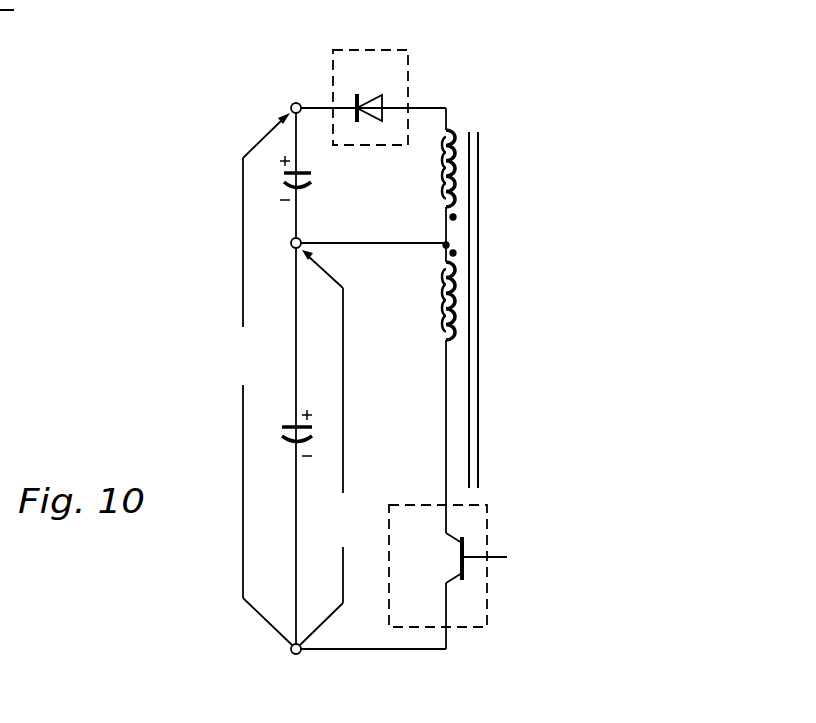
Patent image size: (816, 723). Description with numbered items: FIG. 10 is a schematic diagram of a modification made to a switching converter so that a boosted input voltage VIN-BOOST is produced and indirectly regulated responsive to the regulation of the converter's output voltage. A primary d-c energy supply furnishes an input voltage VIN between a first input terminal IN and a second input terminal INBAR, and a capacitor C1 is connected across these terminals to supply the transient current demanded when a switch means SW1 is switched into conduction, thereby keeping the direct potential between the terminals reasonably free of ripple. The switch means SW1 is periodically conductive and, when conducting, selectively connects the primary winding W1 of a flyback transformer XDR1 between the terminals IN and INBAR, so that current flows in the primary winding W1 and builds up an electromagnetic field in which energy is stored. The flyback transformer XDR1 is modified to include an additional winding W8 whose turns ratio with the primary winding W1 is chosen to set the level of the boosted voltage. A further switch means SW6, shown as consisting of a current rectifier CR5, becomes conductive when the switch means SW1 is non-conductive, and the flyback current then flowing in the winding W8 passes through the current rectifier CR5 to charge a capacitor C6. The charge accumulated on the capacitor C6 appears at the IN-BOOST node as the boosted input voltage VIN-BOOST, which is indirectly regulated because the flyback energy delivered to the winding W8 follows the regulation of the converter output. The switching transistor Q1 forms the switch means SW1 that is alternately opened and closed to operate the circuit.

The switch means SW6 is at (378, 49).
The current rectifier CR5 is at (360, 92).
The flyback transformer XDR1 is at (480, 265).
The winding W8 is at (438, 177).
The primary winding W1 is at (432, 306).
The capacitor C6 is at (309, 178).
The capacitor C1 is at (284, 433).
The switching transistor Q1 is at (466, 558).
The switch means SW1 is at (487, 526).
The IN-BOOST node IN-BOOST is at (296, 103).
The first input terminal IN is at (306, 237).
The second input terminal INBAR is at (299, 655).
The boosted input voltage VIN-BOOST is at (247, 379).
The input voltage VIN is at (325, 447).